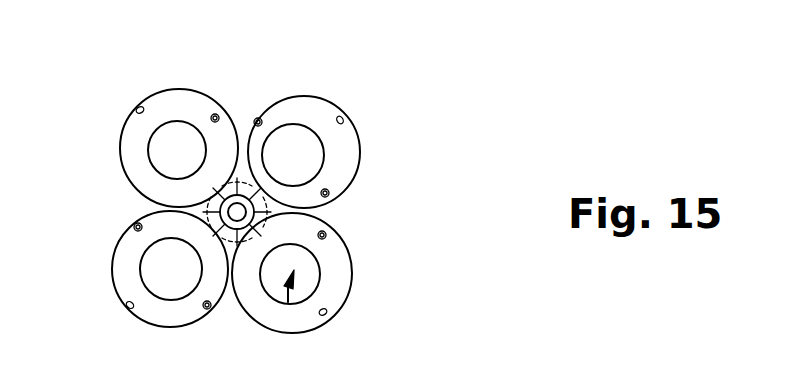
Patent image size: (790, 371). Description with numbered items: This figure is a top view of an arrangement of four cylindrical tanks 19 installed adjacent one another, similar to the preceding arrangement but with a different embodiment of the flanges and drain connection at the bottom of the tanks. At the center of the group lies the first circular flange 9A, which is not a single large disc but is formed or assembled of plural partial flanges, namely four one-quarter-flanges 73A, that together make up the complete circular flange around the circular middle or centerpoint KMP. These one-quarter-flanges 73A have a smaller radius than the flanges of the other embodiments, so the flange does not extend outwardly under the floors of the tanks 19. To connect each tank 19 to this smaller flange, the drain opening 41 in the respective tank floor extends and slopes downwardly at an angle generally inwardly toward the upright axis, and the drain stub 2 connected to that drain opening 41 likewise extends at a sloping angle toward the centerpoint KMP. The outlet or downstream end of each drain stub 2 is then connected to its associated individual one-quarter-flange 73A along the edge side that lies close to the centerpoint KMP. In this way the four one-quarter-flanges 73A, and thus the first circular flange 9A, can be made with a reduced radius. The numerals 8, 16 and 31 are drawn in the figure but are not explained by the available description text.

The cylindrical tank 19 is at (133, 133).
The bore 8 is at (288, 183).
The drain stub 2 is at (250, 224).
The one-quarter-flange 73A is at (238, 200).
The first circular flange 9A is at (227, 180).
The circular centerpoint KMP is at (232, 216).
The outer contour 16 is at (348, 250).
The drain opening 41 is at (263, 233).
The indicator arrow 31 is at (290, 302).